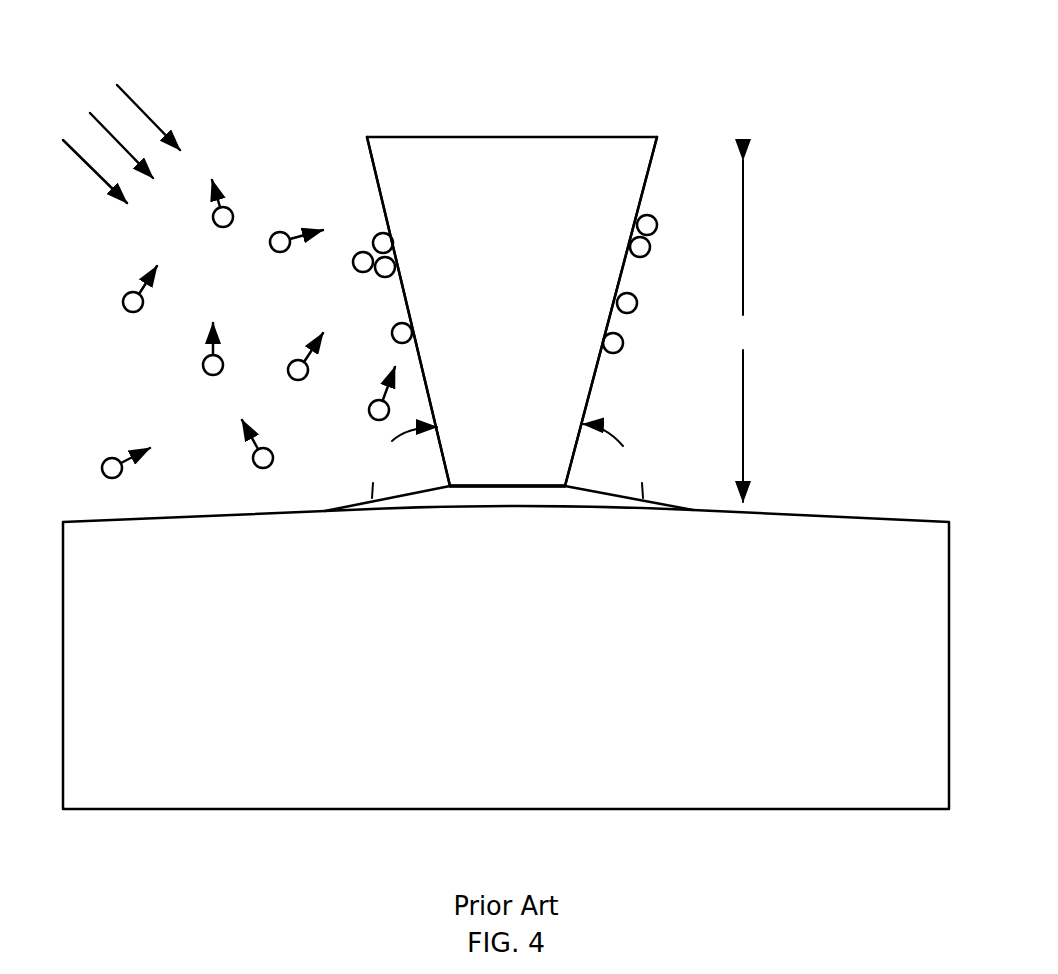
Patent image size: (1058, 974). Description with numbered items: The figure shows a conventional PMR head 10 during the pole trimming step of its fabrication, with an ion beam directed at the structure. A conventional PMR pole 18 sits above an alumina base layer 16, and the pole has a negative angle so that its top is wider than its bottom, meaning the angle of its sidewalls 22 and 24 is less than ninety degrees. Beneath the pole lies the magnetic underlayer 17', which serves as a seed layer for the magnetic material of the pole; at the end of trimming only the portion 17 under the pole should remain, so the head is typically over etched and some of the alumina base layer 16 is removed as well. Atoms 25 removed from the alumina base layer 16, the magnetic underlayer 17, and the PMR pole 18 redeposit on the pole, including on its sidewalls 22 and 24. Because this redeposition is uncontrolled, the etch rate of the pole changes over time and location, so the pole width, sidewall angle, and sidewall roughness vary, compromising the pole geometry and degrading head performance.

The conventional PMR head 10 is at (525, 40).
The alumina base layer 16 is at (853, 517).
The portion of the magnetic underlayer 17 is at (509, 536).
The magnetic underlayer 17' is at (564, 430).
The conventional PMR pole 18 is at (553, 137).
The sidewall 22 is at (648, 185).
The sidewall 24 is at (380, 200).
The atoms 25 is at (355, 268).